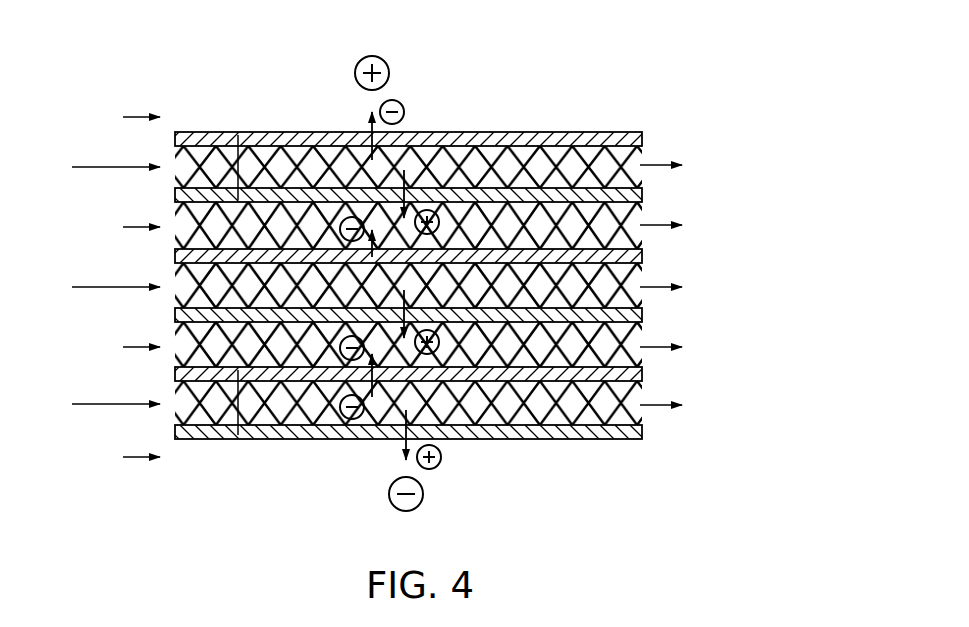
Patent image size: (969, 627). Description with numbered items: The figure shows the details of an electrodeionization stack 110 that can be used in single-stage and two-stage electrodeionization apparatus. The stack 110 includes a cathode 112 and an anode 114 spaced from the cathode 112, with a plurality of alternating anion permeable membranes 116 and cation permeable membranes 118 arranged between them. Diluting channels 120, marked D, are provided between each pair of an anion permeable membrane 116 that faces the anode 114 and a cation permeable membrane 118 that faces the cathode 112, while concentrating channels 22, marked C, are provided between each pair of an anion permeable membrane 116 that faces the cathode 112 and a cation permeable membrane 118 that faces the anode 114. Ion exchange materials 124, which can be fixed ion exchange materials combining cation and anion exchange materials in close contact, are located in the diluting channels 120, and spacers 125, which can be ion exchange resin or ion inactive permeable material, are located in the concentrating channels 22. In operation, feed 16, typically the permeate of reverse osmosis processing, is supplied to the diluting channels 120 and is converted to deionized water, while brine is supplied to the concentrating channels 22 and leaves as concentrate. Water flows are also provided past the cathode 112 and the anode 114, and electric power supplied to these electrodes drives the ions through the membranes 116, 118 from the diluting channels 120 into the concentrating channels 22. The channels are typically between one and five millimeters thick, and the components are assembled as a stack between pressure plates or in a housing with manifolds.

The electrodeionization stack 110 is at (689, 64).
The cathode 112 is at (423, 492).
The anode 114 is at (388, 64).
The anion permeable membrane 116 is at (450, 133).
The cation permeable membrane 118 is at (642, 196).
The diluting channel 120 is at (642, 139).
The ion exchange materials 124 is at (540, 282).
The spacer 125 is at (222, 214).
The feed water 16 is at (116, 285).
The concentrating channel 22 is at (200, 218).